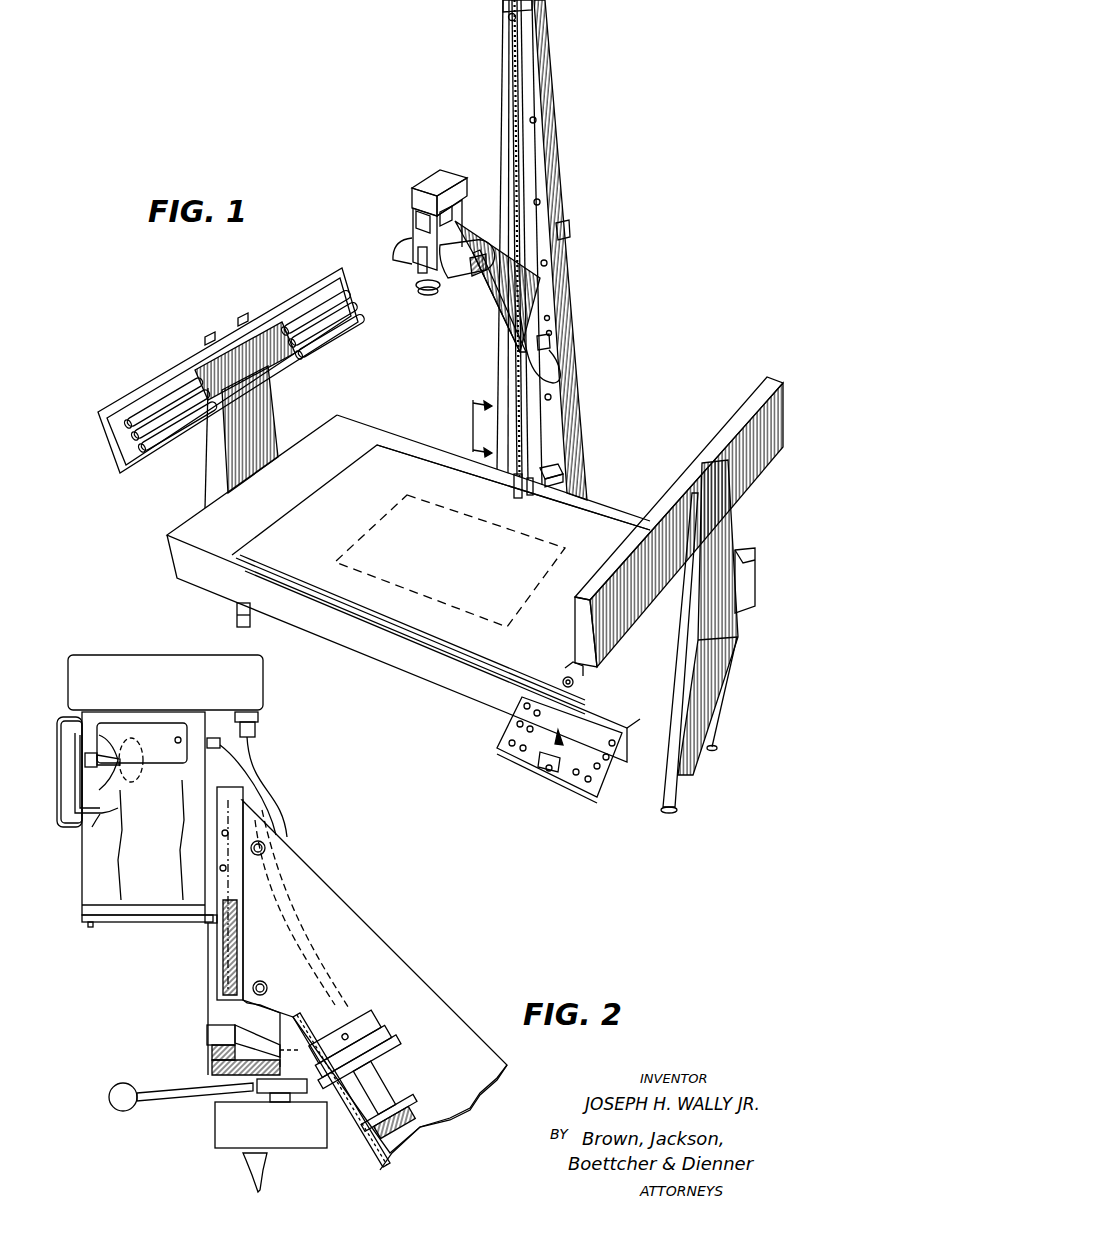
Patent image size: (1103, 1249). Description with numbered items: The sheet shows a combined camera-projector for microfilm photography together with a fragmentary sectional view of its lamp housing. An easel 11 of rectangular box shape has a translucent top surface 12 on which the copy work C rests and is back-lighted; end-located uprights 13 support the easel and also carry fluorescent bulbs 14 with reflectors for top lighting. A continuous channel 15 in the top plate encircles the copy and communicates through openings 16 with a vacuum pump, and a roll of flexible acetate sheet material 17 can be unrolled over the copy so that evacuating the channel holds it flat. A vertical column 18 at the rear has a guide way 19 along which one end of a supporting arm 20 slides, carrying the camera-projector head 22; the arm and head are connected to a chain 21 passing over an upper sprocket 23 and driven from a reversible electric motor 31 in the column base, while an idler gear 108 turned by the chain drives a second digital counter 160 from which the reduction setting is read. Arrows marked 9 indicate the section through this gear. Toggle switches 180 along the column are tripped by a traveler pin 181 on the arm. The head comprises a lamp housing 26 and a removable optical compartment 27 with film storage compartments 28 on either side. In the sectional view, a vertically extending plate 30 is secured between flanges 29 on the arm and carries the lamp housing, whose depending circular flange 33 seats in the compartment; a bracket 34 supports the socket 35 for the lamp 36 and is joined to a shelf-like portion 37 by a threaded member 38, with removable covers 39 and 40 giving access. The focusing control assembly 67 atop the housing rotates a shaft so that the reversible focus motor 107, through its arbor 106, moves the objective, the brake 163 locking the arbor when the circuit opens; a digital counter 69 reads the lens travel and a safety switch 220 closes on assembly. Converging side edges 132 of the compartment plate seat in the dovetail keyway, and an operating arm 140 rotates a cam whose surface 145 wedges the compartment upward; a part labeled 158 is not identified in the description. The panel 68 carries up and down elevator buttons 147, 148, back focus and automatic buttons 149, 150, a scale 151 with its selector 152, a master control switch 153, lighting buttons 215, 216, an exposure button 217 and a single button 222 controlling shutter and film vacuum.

In FIG. 1, the section line 9- 9 is at (469, 422).
In FIG. 1, the easel 11 is at (380, 663).
In FIG. 1, the translucent top surface 12 is at (607, 527).
In FIG. 1, the end-located uprights 13 is at (212, 467).
In FIG. 1, the fluorescent bulbs 14 is at (302, 313).
In FIG. 1, the continuous channel 15 is at (260, 537).
In FIG. 1, the openings 16 is at (317, 490).
In FIG. 1, the roll of flexible acetate sheet material 17 is at (573, 662).
In FIG. 1, the vertical column 18 is at (558, 164).
In FIG. 1, the vertical guide way 19 is at (527, 52).
In FIG. 1, the supporting arm 20 is at (497, 322).
In FIG. 2, the supporting arm 20 is at (352, 925).
In FIG. 1, the chain 21 is at (510, 82).
In FIG. 1, the combined camera-projector head 22 is at (443, 465).
In FIG. 1, the upper sprocket 23 is at (508, 17).
In FIG. 1, the lamp housing 26 is at (412, 227).
In FIG. 2, the lamp housing 26 is at (87, 873).
In FIG. 1, the optical compartment 27 is at (418, 275).
In FIG. 1, the film storage compartments 28 is at (393, 252).
In FIG. 2, the flanges 29 is at (240, 790).
In FIG. 2, the vertically extending plate 30 is at (210, 921).
In FIG. 2, the reversible electric motor 31 is at (226, 868).
In FIG. 2, the depending circular shaped flange 33 is at (117, 922).
In FIG. 2, the bracket 34 is at (78, 811).
In FIG. 2, the socket 35 is at (87, 760).
In FIG. 2, the lamp 36 is at (122, 788).
In FIG. 2, the shelf-like portion 37 is at (92, 827).
In FIG. 2, the threaded member 38 is at (118, 809).
In FIG. 2, the removable cover 39 is at (58, 717).
In FIG. 2, the removable cover 40 is at (142, 727).
In FIG. 1, the focusing control assembly 67 is at (440, 173).
In FIG. 2, the focusing control assembly 67 is at (115, 655).
In FIG. 1, the panel 68 is at (497, 743).
In FIG. 1, the digital counter 69 is at (424, 294).
In FIG. 2, the arbor 106 is at (380, 1073).
In FIG. 2, the reversible focus motor 107 is at (408, 1127).
In FIG. 1, the idler gear 108 is at (519, 481).
In FIG. 2, the converging side edges 132 is at (213, 960).
In FIG. 2, the operating arm 140 is at (152, 1082).
In FIG. 2, the cam surface 145 is at (233, 1028).
In FIG. 1, the up elevator button 147 is at (512, 718).
In FIG. 1, the down elevator button 148 is at (517, 726).
In FIG. 1, the back focus button 149 is at (418, 280).
In FIG. 1, the automatic button 150 is at (508, 746).
In FIG. 1, the scale 151 is at (574, 690).
In FIG. 1, the selector 152 is at (548, 772).
In FIG. 1, the master control switch 153 is at (611, 738).
In FIG. 2, the foot 158 is at (243, 1172).
In FIG. 1, the second digital counter 160 is at (558, 473).
In FIG. 2, the brake 163 is at (382, 1047).
In FIG. 1, the toggle switches 180 is at (553, 403).
In FIG. 1, the traveler pin 181 is at (549, 357).
In FIG. 1, the top lighting button 215 is at (576, 776).
In FIG. 1, the back lighting button 216 is at (588, 783).
In FIG. 1, the exposure button 217 is at (599, 770).
In FIG. 2, the safety switch 220 is at (88, 924).
In FIG. 1, the single button 222 is at (608, 761).
In FIG. 1, the copy work C is at (540, 533).